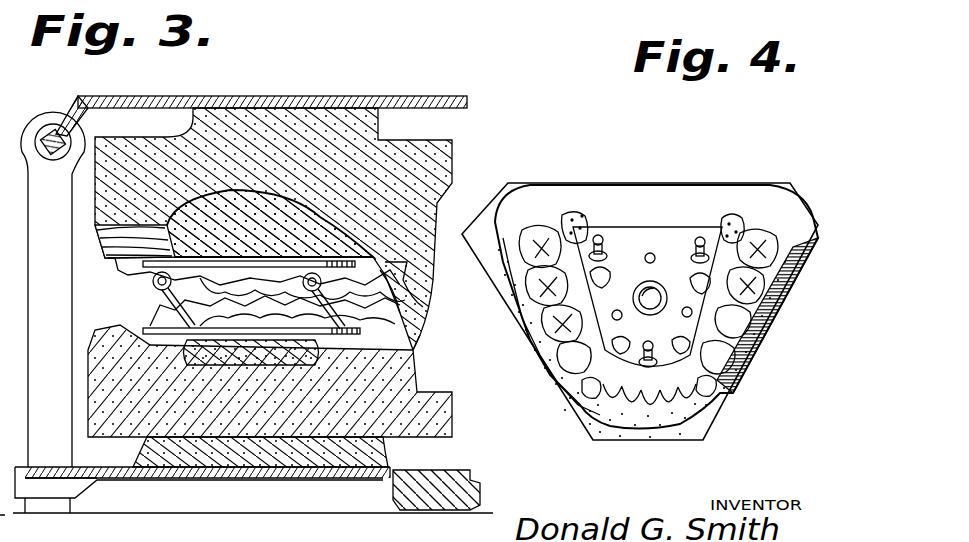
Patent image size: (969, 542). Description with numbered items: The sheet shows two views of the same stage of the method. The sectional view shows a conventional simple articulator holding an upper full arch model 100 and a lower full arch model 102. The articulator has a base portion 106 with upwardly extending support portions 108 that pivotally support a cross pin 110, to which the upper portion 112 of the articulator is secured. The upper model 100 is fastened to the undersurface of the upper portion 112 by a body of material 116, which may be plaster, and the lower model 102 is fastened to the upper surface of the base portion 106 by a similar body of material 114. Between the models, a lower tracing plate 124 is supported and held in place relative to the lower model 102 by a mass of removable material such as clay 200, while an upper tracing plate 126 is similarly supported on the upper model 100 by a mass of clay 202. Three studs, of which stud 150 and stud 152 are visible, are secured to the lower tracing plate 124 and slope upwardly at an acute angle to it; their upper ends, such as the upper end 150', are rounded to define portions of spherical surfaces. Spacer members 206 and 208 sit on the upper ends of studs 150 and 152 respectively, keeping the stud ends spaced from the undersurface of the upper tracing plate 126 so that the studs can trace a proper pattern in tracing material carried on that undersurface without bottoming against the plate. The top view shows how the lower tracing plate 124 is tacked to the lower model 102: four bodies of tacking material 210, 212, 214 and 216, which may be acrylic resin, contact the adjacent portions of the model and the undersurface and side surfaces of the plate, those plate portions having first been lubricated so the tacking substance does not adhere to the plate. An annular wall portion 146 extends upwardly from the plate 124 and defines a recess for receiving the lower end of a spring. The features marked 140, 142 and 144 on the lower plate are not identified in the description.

In FIG. 3, the upper full arch model 100 is at (473, 161).
In FIG. 3, the lower full arch model 102 is at (433, 396).
In FIG. 4, the lower full arch model 102 is at (708, 178).
In FIG. 3, the base portion 106 is at (462, 480).
In FIG. 3, the support portions 108 is at (35, 236).
In FIG. 3, the cross pin 110 is at (80, 130).
In FIG. 3, the upper portion of the articulator 112 is at (437, 98).
In FIG. 3, the body of material 114 is at (262, 480).
In FIG. 3, the body of material 116 is at (313, 120).
In FIG. 3, the lower tracing plate 124 is at (325, 350).
In FIG. 4, the lower tracing plate 124 is at (654, 218).
In FIG. 3, the upper tracing plate 126 is at (340, 260).
In FIG. 4, the locating pin hole 140 is at (655, 256).
In FIG. 4, the central boss 142 is at (622, 316).
In FIG. 4, the locating hole 144 is at (690, 310).
In FIG. 4, the annular wall portion 146 is at (645, 280).
In FIG. 3, the stud 150 is at (141, 372).
In FIG. 3, the upper end of stud 150' is at (275, 308).
In FIG. 3, the stud 152 is at (412, 360).
In FIG. 3, the mass of removable material 200 is at (268, 358).
In FIG. 3, the mass of clay 202 is at (278, 211).
In FIG. 3, the spacer member 206 is at (132, 272).
In FIG. 3, the spacer member 208 is at (378, 263).
In FIG. 4, the body of tacking material 210 is at (585, 209).
In FIG. 4, the body of tacking material 212 is at (737, 210).
In FIG. 4, the body of tacking material 214 is at (597, 405).
In FIG. 4, the body of tacking material 216 is at (722, 400).